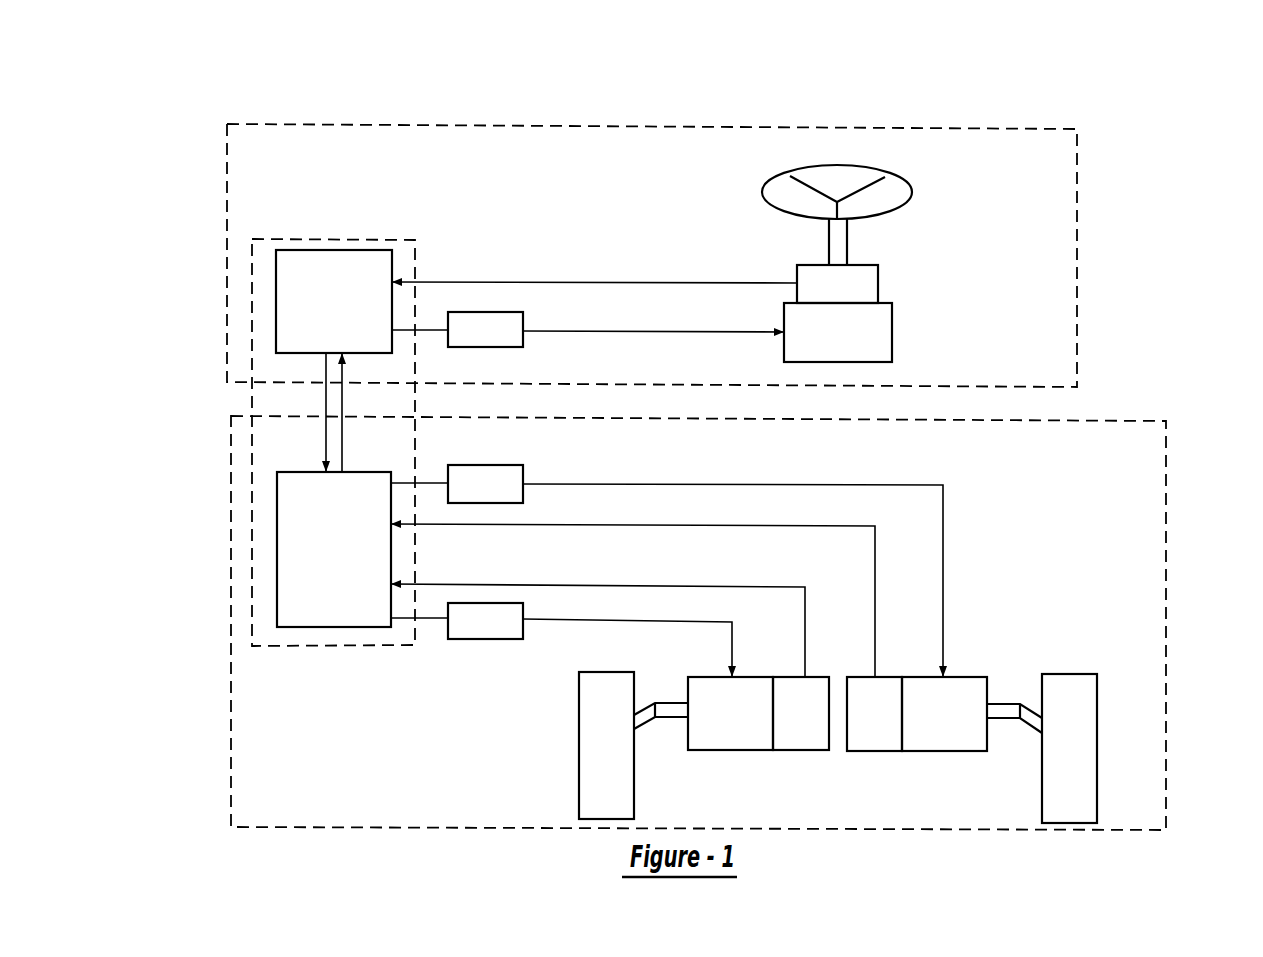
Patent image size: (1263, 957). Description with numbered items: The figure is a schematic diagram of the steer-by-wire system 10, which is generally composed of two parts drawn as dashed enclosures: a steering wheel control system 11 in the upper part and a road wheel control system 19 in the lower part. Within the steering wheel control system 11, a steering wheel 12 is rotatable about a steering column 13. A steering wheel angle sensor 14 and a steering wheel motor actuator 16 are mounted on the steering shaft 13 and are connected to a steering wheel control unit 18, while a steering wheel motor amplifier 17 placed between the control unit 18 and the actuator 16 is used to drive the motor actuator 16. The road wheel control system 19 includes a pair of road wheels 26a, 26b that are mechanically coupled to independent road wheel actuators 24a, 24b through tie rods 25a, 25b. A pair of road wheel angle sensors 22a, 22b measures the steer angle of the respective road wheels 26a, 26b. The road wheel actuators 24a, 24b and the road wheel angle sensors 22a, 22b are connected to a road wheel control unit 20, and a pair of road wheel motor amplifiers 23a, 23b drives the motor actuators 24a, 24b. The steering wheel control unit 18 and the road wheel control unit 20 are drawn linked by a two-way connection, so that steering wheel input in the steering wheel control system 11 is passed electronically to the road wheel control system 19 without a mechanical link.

The steer-by-wire system 10 is at (303, 58).
The steering wheel control system 11 is at (1077, 270).
The steering wheel 12 is at (912, 190).
The steering column 13 is at (829, 240).
The steering wheel angle sensor 14 is at (878, 287).
The steering wheel motor actuator 16 is at (892, 342).
The steering wheel motor amplifier 17 is at (505, 312).
The steering wheel control unit 18 is at (381, 250).
The road wheel control system 19 is at (1166, 539).
The road wheel control unit 20 is at (332, 627).
The road wheel angle sensor 22a is at (885, 677).
The road wheel angle sensor 22b is at (818, 677).
The road wheel motor amplifier 23a is at (482, 639).
The road wheel motor amplifier 23b is at (505, 465).
The road wheel actuator 24a is at (962, 677).
The road wheel actuator 24b is at (748, 677).
The tie rod 25a is at (1015, 704).
The tie rod 25b is at (672, 700).
The road wheel 26a is at (1097, 780).
The road wheel 26b is at (634, 786).